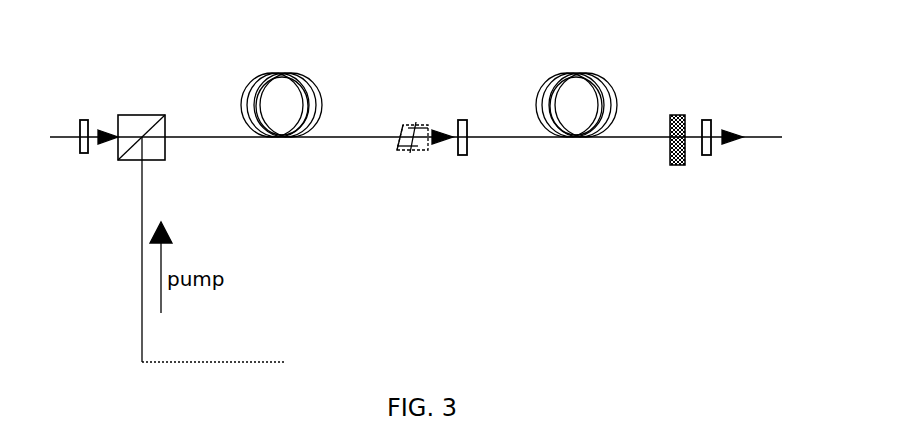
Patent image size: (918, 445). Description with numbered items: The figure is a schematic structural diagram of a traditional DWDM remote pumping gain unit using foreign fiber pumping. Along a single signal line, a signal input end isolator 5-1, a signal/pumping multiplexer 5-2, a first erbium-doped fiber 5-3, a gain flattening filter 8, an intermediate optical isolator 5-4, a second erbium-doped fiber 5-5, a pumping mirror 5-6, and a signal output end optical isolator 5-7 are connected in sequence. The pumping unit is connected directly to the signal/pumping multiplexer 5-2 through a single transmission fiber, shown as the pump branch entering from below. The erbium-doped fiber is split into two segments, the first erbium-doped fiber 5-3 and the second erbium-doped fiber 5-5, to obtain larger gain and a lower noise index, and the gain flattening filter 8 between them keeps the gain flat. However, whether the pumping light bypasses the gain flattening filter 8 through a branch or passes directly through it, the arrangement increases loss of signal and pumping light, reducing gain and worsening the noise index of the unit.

The signal input end isolator 5-1 is at (79, 148).
The signal/pumping multiplexer 5-2 is at (140, 127).
The first erbium-doped fiber 5-3 is at (282, 92).
The intermediate optical isolator 5-4 is at (458, 122).
The second erbium-doped fiber 5-5 is at (575, 92).
The pumping mirror 5-6 is at (670, 120).
The signal output end optical isolator 5-7 is at (702, 122).
The gain flattening filter 8 is at (402, 137).